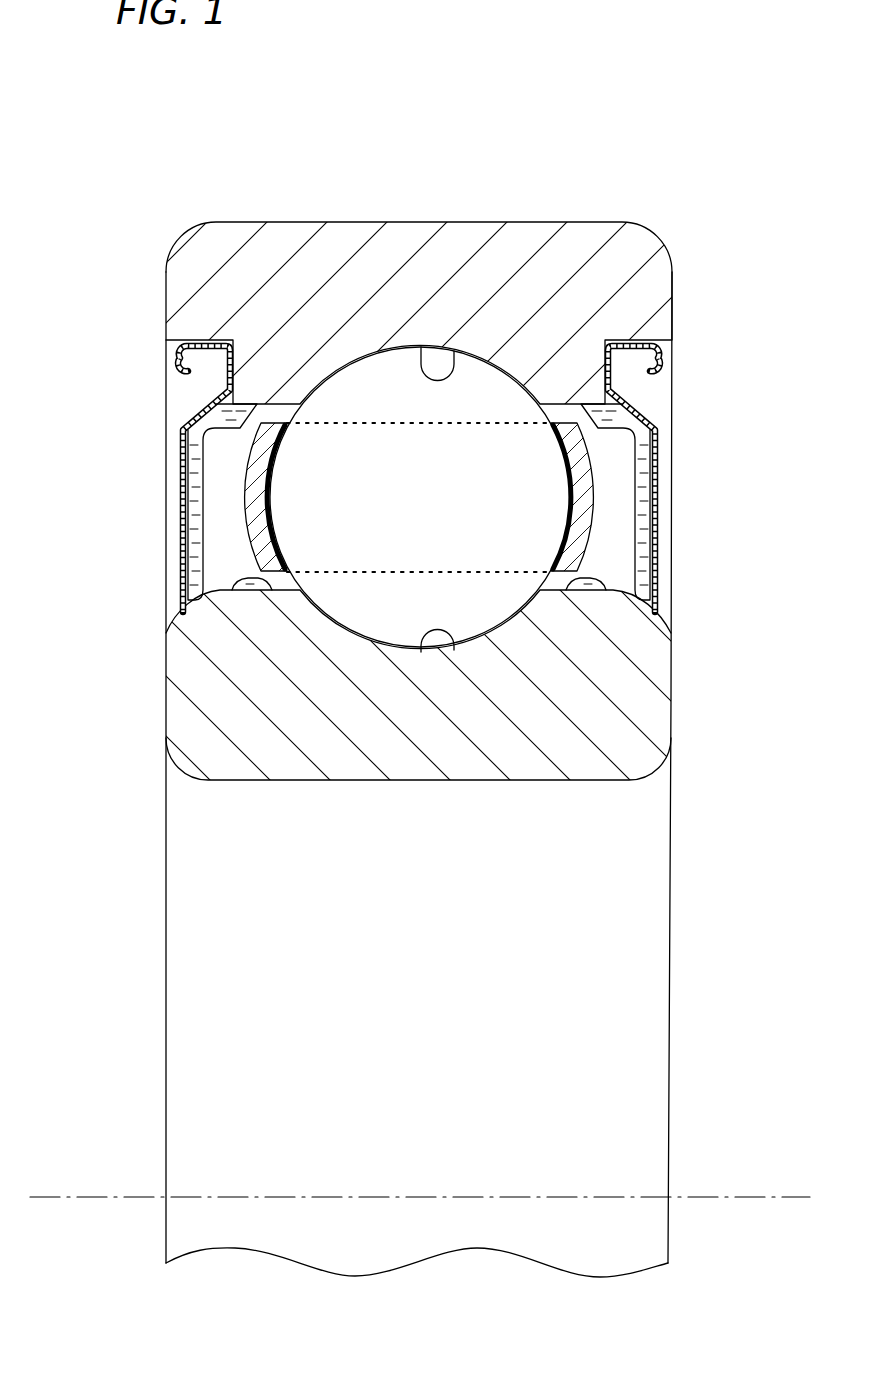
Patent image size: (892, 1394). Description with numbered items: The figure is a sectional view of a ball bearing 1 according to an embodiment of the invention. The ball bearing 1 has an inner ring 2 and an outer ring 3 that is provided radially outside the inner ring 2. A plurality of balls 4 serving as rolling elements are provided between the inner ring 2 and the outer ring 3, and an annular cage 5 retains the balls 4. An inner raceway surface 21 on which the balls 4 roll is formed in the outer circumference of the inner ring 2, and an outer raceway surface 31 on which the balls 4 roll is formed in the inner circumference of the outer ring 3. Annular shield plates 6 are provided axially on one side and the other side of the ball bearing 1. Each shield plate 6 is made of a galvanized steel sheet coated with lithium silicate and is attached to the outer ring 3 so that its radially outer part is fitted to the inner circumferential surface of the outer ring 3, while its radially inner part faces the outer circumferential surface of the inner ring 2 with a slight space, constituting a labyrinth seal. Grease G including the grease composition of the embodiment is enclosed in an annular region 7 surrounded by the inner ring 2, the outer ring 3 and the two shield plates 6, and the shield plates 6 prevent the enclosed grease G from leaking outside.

The ball bearing 1 is at (681, 181).
The inner ring 2 is at (541, 758).
The inner raceway surface 21 is at (447, 652).
The outer ring 3 is at (538, 225).
The outer raceway surface 31 is at (453, 377).
The balls 4 is at (371, 383).
The cage 5 is at (583, 497).
The shield plate 6 is at (649, 394).
The annular region 7 is at (652, 458).
The grease G is at (648, 541).